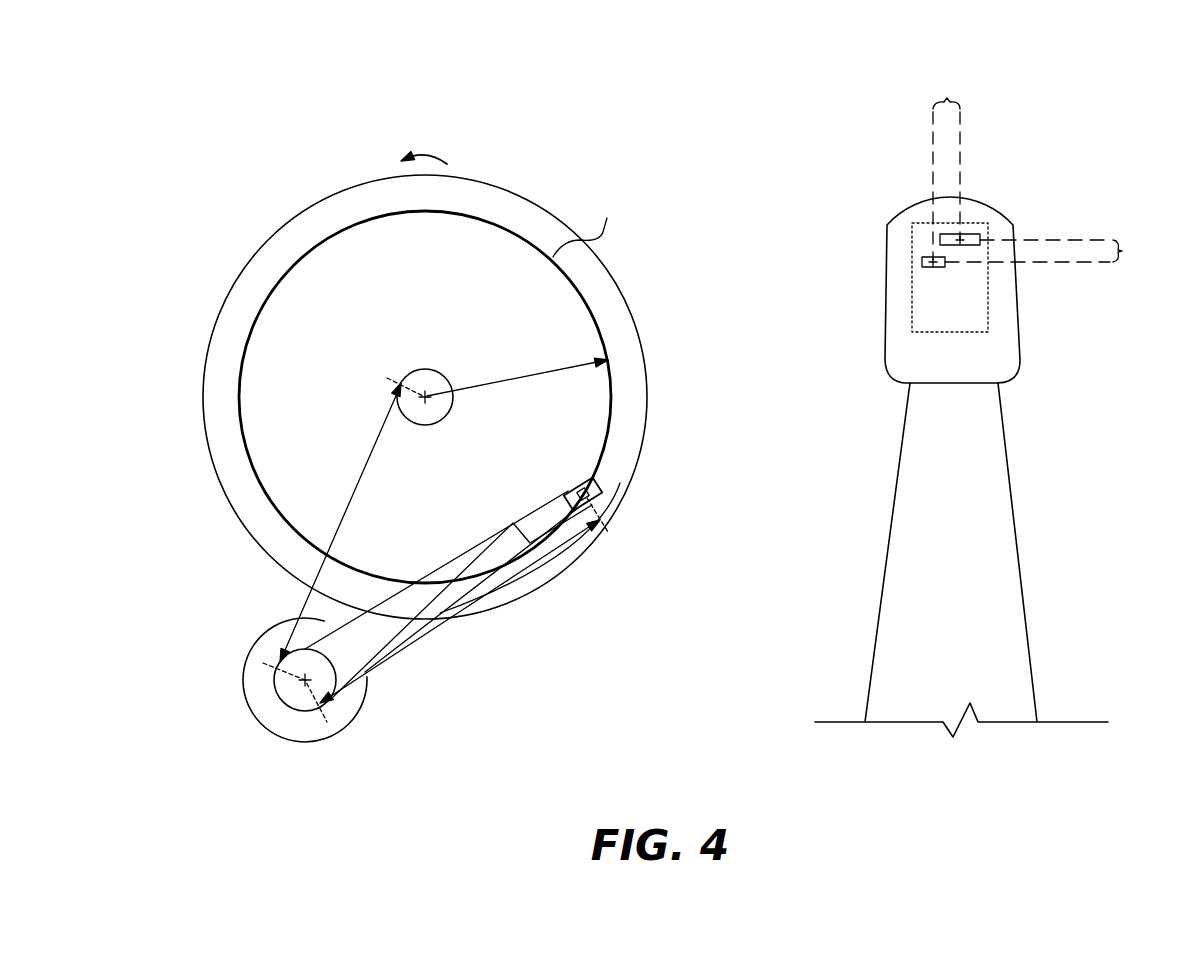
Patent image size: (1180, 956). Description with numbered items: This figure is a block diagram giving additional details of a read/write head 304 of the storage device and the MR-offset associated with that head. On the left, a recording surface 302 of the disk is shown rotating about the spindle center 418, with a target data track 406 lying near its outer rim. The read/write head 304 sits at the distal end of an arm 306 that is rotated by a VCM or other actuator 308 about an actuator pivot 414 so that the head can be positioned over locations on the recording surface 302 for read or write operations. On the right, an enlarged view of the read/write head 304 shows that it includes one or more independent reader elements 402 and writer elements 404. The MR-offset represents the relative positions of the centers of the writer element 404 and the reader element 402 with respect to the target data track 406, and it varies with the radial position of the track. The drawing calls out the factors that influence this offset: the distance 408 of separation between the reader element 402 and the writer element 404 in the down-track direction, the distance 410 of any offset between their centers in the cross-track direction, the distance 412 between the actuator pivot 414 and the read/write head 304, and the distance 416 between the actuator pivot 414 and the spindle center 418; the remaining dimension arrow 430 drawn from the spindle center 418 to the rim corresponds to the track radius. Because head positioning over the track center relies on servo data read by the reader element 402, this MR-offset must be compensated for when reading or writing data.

The recording surface 302 is at (412, 293).
The read/write head 304 is at (585, 486).
The arm 306 is at (452, 568).
The actuator 308 is at (255, 676).
The reader element 402 is at (928, 257).
The writer element 404 is at (970, 237).
The target data track 406 is at (587, 226).
The down-track separation distance 408 is at (1052, 250).
The cross-track offset distance 410 is at (947, 167).
The pivot-to-head distance 412 is at (423, 637).
The actuator pivot 414 is at (304, 683).
The pivot-to-spindle distance 416 is at (366, 461).
The spindle center 418 is at (431, 395).
The wheel radius 430 is at (545, 372).